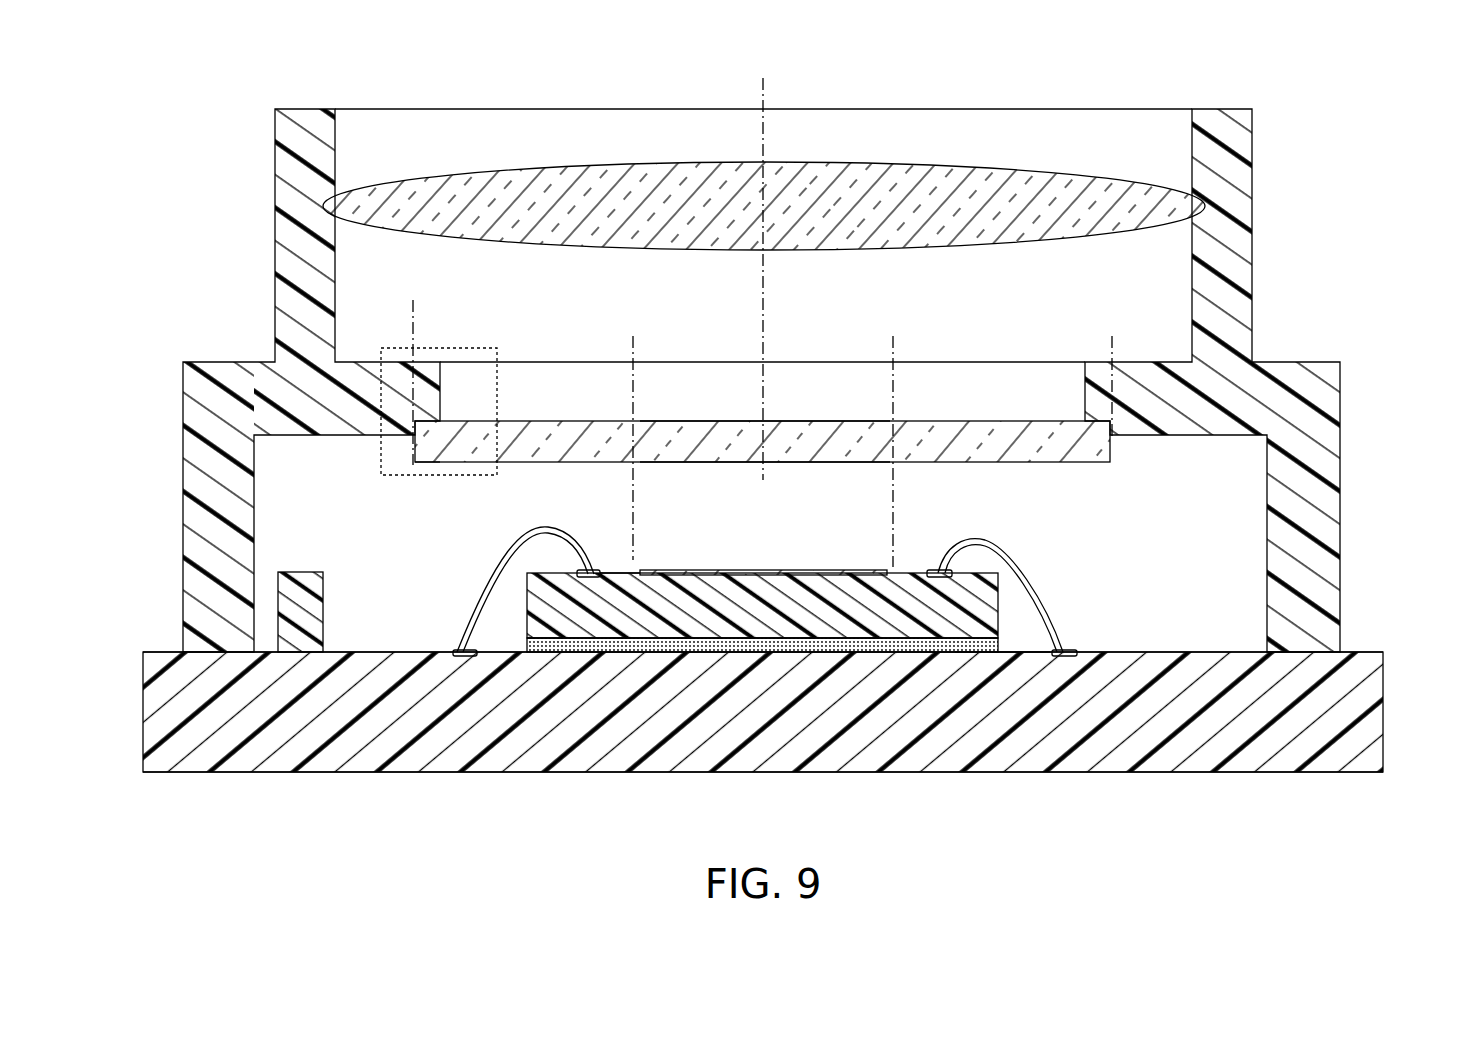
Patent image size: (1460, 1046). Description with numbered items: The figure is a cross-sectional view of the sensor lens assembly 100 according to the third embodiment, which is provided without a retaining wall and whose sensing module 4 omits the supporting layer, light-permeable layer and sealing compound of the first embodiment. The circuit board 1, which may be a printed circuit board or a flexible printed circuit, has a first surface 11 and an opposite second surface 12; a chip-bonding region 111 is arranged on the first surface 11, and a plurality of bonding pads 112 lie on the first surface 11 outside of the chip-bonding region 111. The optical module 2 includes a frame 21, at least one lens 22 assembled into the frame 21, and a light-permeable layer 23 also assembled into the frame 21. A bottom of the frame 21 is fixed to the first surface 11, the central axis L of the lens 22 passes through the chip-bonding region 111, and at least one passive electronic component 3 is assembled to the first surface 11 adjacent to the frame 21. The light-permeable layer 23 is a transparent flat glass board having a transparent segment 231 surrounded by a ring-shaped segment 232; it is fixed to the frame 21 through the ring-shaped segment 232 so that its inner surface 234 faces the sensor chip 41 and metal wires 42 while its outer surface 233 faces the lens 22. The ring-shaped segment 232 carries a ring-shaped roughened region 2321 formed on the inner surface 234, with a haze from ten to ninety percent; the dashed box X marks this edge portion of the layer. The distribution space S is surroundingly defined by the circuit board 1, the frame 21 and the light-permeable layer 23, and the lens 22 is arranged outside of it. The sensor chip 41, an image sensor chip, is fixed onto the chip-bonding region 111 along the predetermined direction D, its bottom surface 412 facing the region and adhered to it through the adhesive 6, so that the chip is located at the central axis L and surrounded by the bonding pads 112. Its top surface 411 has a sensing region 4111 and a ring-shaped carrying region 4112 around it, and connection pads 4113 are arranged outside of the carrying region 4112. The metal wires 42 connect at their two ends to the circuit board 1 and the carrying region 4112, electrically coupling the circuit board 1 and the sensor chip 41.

The sensor lens assembly 100 is at (1262, 62).
The circuit board 1 is at (145, 705).
The first surface 11 is at (160, 650).
The second surface 12 is at (162, 774).
The chip-bonding region 111 is at (966, 651).
The bonding pads 112 is at (467, 656).
The optical module 2 is at (125, 183).
The frame 21 is at (275, 218).
The lens 22 is at (398, 228).
The light-permeable layer 23 is at (412, 446).
The transparent segment 231 is at (633, 336).
The ring-shaped segment 232 is at (415, 336).
The outer surface 233 is at (736, 420).
The inner surface 234 is at (716, 465).
The ring-shaped roughened region 2321 is at (438, 467).
The passive electronic component 3 is at (302, 570).
The sensing module 4 is at (1010, 542).
The sensor chip 41 is at (526, 606).
The top surface 411 is at (538, 820).
The sensing region 4111 is at (807, 571).
The carrying region 4112 is at (614, 567).
The connection pads 4113 is at (590, 578).
The bottom surface 412 is at (918, 641).
The metal wires 42 is at (1042, 586).
The adhesive 6 is at (828, 651).
The distribution space S is at (1242, 491).
The enlarged region X is at (477, 478).
The central axis L is at (766, 92).
The predetermined direction D is at (1447, 665).